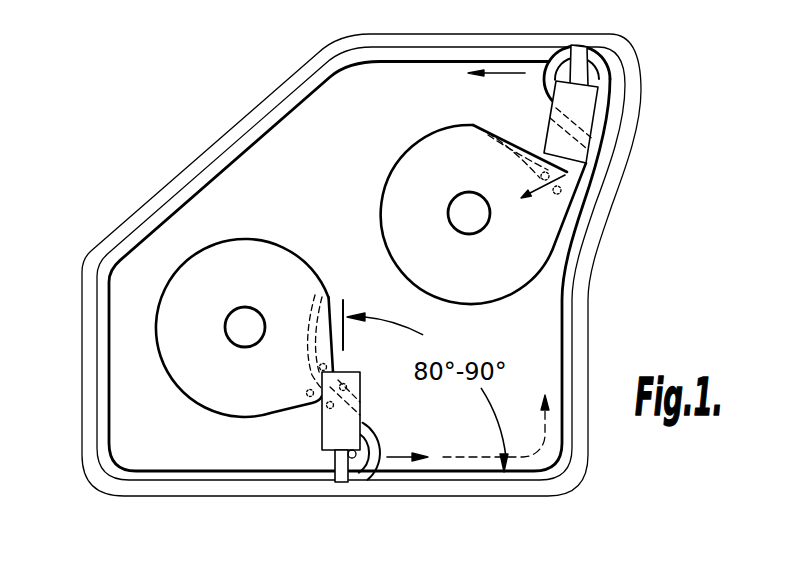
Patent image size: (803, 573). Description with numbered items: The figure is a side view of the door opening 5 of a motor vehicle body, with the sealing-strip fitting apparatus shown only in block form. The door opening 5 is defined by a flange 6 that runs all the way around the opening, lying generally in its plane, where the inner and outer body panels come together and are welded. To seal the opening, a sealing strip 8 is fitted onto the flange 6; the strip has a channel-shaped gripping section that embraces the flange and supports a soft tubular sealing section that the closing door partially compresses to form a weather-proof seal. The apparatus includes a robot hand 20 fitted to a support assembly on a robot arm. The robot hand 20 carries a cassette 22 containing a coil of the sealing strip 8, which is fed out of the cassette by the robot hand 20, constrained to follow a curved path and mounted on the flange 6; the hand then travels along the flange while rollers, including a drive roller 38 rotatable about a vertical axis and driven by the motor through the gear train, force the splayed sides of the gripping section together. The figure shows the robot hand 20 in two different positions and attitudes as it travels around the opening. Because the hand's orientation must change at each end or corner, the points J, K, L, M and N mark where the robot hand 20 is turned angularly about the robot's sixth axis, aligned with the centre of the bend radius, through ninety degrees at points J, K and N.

The door opening 5 is at (314, 169).
The flange 6 is at (602, 152).
The sealing strip 8 is at (372, 433).
The robot hand 20 is at (357, 373).
The cassette 22 is at (240, 248).
The drive roller 38 is at (333, 463).
The turning point M is at (357, 56).
The turning point N is at (613, 72).
The turning point L is at (103, 267).
The turning point K is at (113, 464).
The turning point J is at (552, 462).